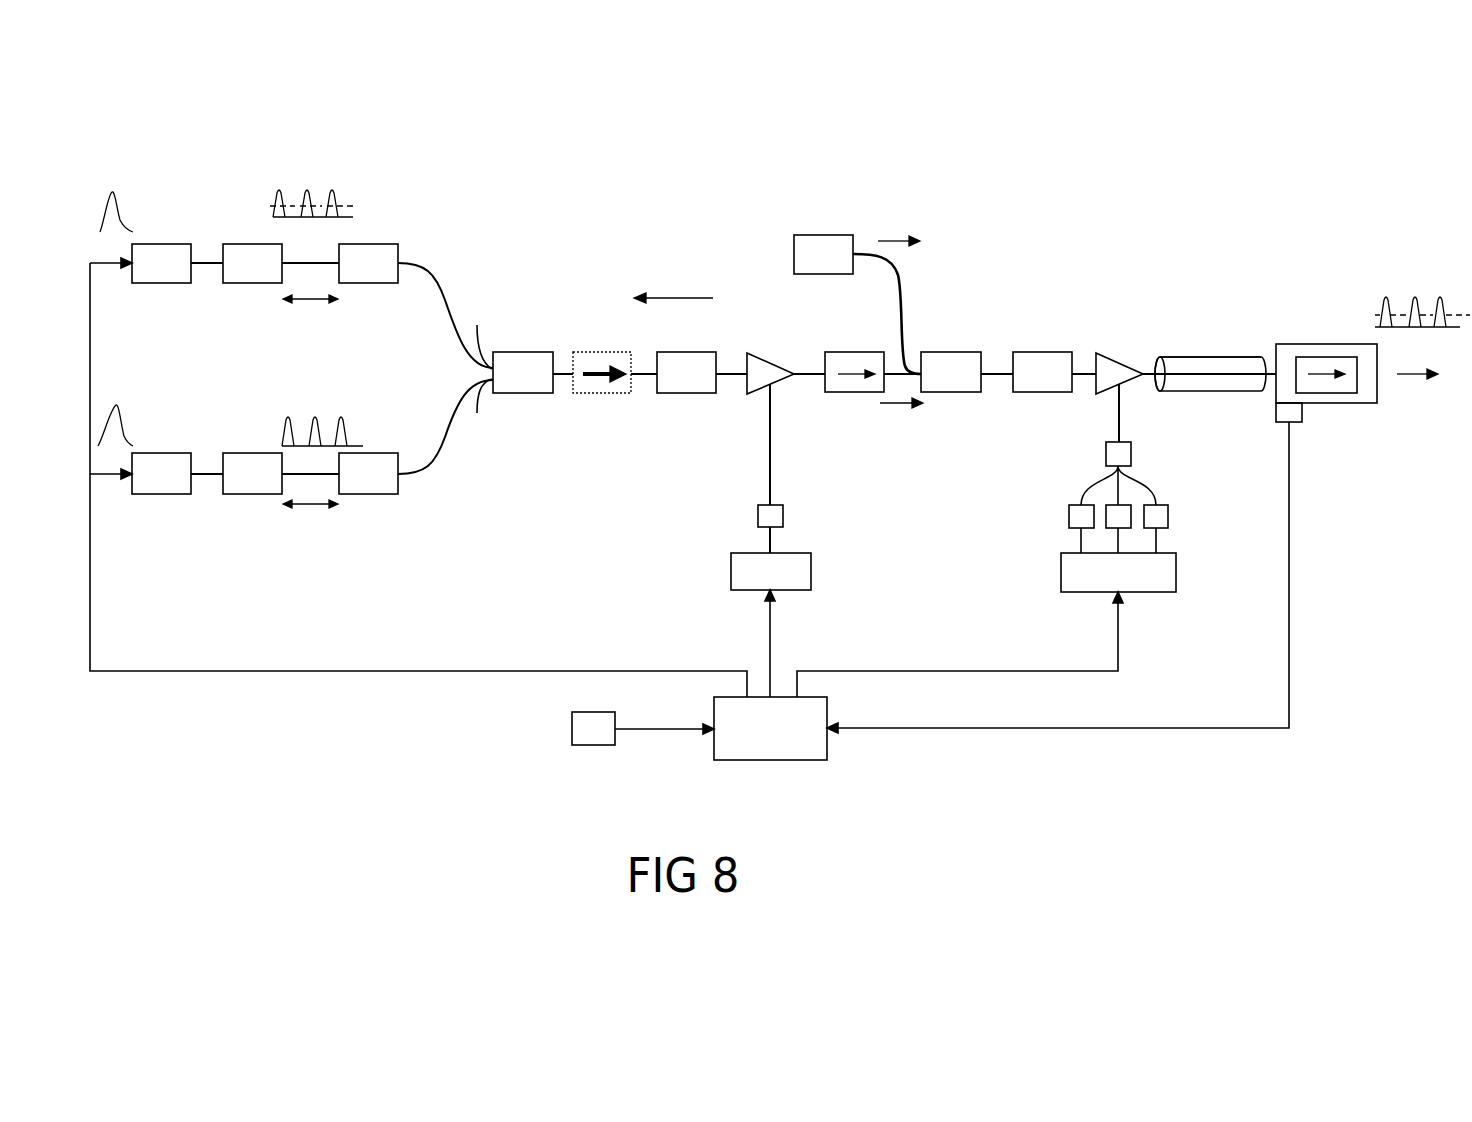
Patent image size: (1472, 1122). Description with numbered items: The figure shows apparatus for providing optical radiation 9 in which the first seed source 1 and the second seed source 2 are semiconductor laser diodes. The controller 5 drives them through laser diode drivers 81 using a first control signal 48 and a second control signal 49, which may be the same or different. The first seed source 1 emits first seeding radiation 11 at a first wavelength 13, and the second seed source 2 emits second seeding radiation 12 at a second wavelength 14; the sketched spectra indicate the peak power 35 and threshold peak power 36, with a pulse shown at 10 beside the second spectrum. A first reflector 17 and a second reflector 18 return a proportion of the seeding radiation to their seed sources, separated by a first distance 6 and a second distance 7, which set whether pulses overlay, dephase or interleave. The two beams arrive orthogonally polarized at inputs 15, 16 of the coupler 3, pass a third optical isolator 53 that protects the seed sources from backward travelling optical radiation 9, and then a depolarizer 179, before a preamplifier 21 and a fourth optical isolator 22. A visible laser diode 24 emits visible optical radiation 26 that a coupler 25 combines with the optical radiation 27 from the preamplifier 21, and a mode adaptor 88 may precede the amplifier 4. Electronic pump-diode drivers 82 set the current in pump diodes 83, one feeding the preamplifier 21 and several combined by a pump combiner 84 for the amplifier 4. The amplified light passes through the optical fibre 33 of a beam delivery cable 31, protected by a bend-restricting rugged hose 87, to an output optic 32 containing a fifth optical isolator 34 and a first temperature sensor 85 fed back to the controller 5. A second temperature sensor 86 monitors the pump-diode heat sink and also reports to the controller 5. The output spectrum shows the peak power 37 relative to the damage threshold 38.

The first seed source 1 is at (253, 285).
The second seed source 2 is at (252, 497).
The coupler 3 is at (520, 352).
The amplifier 4 is at (1117, 363).
The controller 5 is at (798, 762).
The first distance 6 is at (312, 300).
The second distance 7 is at (312, 505).
The optical radiation 9 is at (672, 298).
The spectral line of second wavelength 10 is at (285, 420).
The first seeding radiation 11 is at (342, 204).
The second seeding radiation 12 is at (350, 432).
The first wavelength 13 is at (308, 150).
The second wavelength 14 is at (338, 383).
The input 15 is at (482, 330).
The input 16 is at (480, 415).
The first reflector 17 is at (372, 243).
The second reflector 18 is at (368, 495).
The preamplifier 21 is at (770, 358).
The fourth optical isolator 22 is at (850, 394).
The visible laser diode 24 is at (825, 233).
The coupler 25 is at (953, 352).
The visible optical radiation 26 is at (903, 236).
The optical radiation 27 is at (901, 407).
The beam delivery cable 31 is at (1222, 392).
The output optic 32 is at (1328, 343).
The optical fibre 33 is at (1178, 370).
The fifth optical isolator 34 is at (1328, 395).
The peak power 35 is at (277, 188).
The threshold peak power 36 is at (333, 198).
The peak power 37 is at (1385, 300).
The damage threshold 38 is at (1425, 310).
The first control signal 48 is at (118, 221).
The second control signal 49 is at (133, 420).
The third optical isolator 53 is at (598, 395).
The laser diode driver 81 is at (162, 285).
The electronic pump-diode driver 82 is at (730, 572).
The pump diode 83 is at (757, 516).
The pump combiner 84 is at (1105, 452).
The first temperature sensor 85 is at (1275, 412).
The second temperature sensor 86 is at (595, 748).
The bend-restricting rugged hose 87 is at (1225, 355).
The mode adaptor 88 is at (1048, 352).
The depolarizer 179 is at (680, 394).